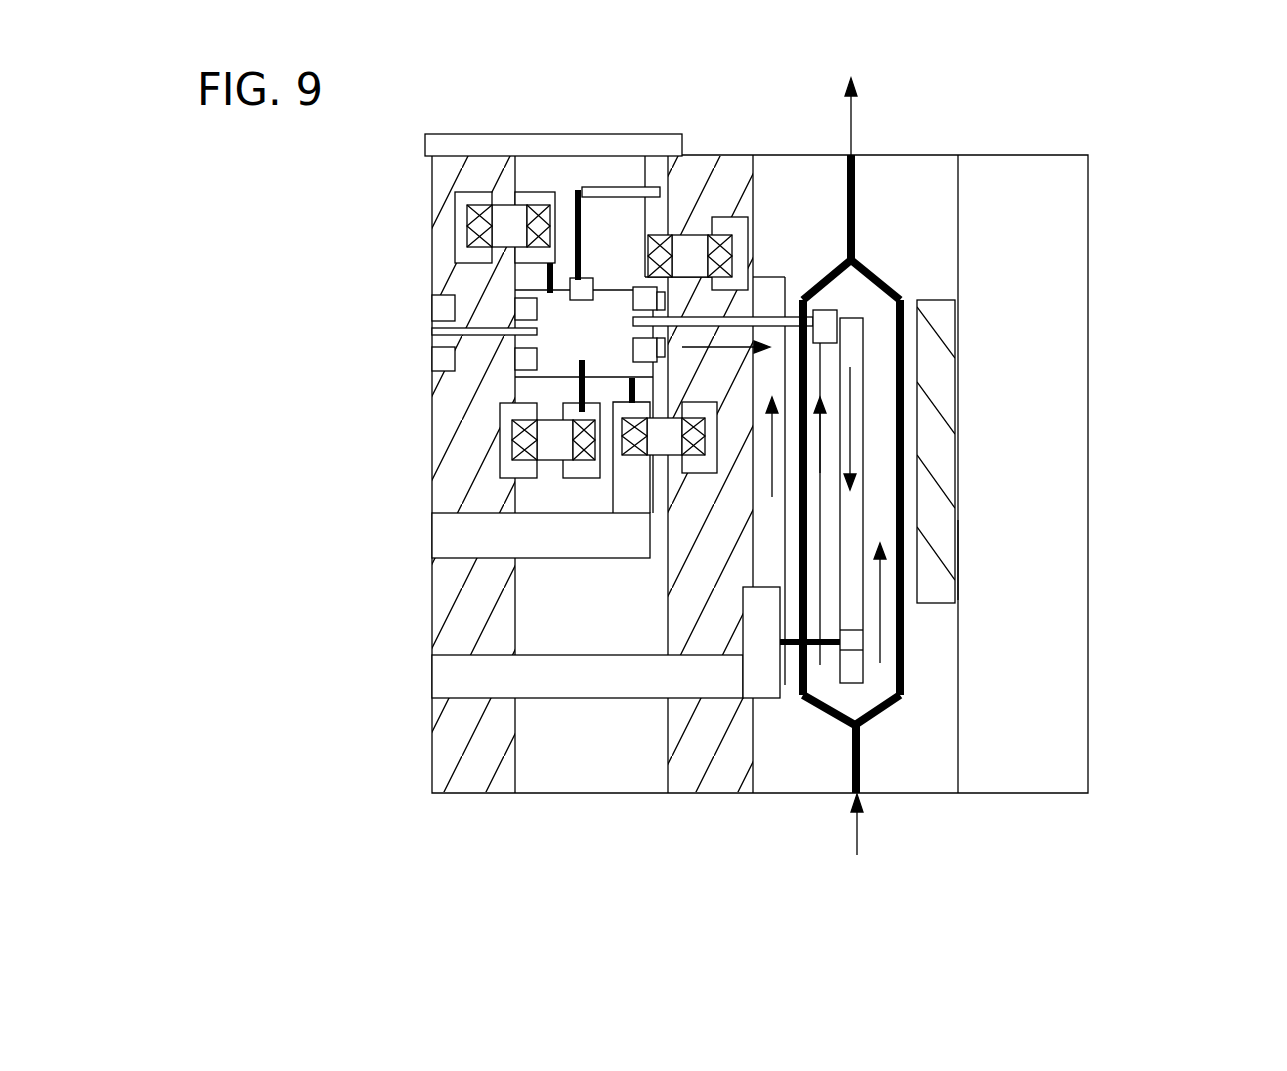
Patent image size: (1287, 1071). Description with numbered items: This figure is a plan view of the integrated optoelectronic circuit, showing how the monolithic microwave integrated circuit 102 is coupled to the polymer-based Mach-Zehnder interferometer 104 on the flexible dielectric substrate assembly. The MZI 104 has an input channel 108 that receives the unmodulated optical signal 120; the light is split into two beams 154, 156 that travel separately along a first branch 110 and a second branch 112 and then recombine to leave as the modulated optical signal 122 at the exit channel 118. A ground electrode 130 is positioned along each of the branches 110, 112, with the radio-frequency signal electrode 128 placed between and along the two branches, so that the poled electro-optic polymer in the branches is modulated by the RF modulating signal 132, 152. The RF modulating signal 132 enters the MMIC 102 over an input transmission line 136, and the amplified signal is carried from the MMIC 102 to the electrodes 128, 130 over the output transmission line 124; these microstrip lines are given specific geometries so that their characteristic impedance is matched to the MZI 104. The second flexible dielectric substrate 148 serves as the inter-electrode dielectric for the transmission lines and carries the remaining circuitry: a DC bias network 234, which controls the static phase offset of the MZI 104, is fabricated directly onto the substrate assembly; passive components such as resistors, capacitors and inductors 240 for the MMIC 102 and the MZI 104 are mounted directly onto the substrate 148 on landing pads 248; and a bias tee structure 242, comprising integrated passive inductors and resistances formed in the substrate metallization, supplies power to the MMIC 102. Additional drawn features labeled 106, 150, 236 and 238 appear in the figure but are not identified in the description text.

The monolithic microwave integrated circuit 102 is at (549, 355).
The Mach-Zehnder interferometer 104 is at (1145, 399).
The waveguide region 106 is at (798, 163).
The input channel 108 is at (863, 757).
The first branch 110 is at (920, 520).
The second branch 112 is at (900, 355).
The exit channel 118 is at (853, 230).
The optical signal 120 is at (857, 836).
The modulated optical signal 122 is at (851, 128).
The output transmission line 124 is at (762, 300).
The RF signal electrode 128 is at (857, 487).
The ground electrode 130 is at (770, 287).
The RF modulating signal 132 is at (420, 327).
The input transmission line 136 is at (432, 330).
The second flexible dielectric substrate 148 is at (1070, 673).
The electric field arrow 150 is at (790, 445).
The RF modulating signal 152 is at (722, 352).
The first optical beam 154 is at (880, 618).
The second optical beam 156 is at (783, 488).
The DC bias network 234 is at (458, 682).
The top plate 236 is at (433, 140).
The upper support bar 238 is at (462, 543).
The passive components 240 is at (507, 218).
The bias tee structure 242 is at (620, 187).
The landing pads 248 is at (500, 440).